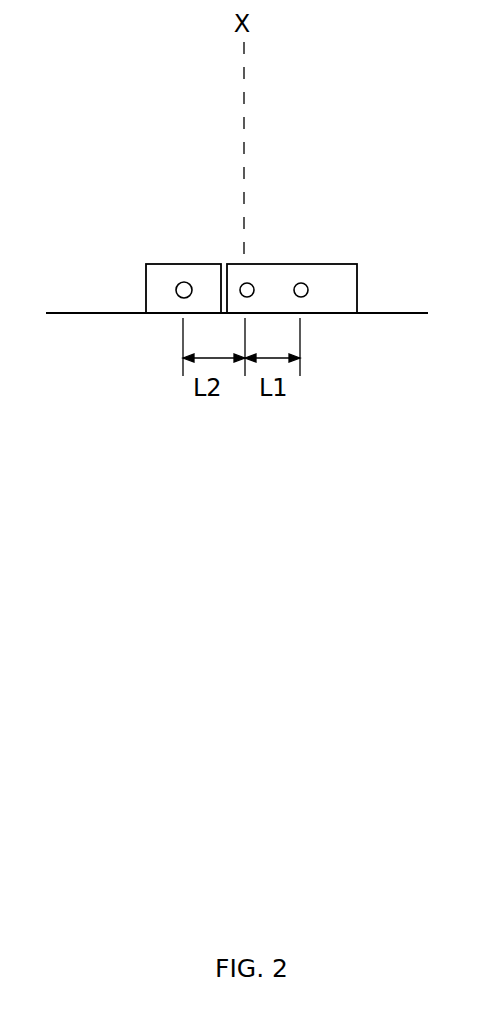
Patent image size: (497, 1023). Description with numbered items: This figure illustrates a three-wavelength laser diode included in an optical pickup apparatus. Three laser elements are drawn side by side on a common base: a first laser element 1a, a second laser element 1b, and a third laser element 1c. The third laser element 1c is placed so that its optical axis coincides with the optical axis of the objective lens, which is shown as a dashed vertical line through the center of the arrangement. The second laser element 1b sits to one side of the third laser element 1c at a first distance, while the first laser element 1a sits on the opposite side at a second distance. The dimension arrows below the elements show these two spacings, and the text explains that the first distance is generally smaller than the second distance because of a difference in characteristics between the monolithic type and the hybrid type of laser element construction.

The first laser element 1a is at (184, 284).
The second laser element 1b is at (308, 289).
The third laser element 1c is at (253, 289).